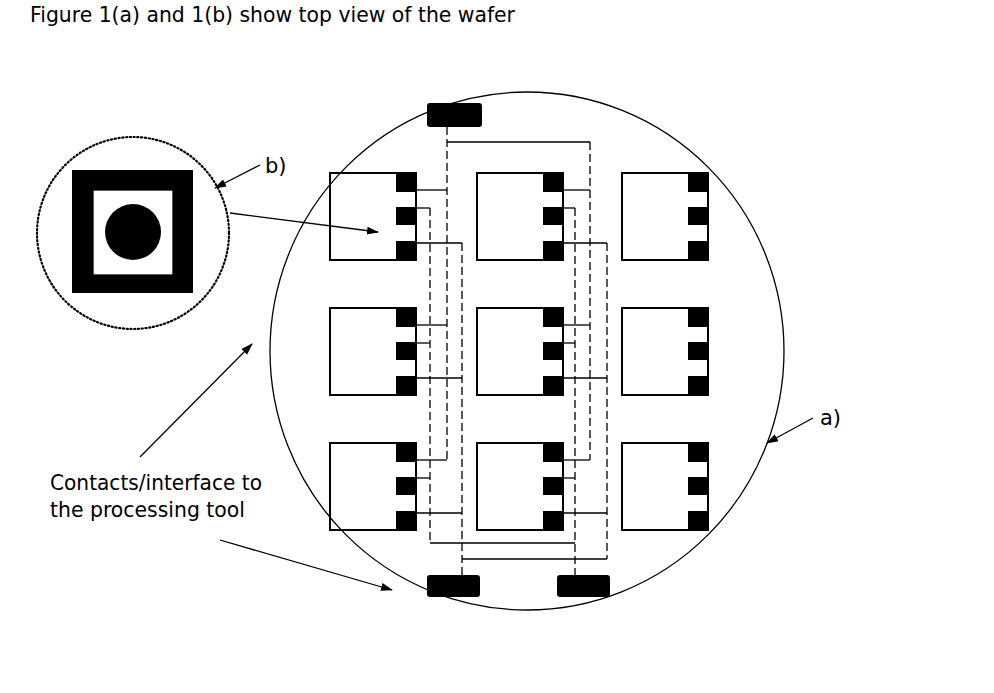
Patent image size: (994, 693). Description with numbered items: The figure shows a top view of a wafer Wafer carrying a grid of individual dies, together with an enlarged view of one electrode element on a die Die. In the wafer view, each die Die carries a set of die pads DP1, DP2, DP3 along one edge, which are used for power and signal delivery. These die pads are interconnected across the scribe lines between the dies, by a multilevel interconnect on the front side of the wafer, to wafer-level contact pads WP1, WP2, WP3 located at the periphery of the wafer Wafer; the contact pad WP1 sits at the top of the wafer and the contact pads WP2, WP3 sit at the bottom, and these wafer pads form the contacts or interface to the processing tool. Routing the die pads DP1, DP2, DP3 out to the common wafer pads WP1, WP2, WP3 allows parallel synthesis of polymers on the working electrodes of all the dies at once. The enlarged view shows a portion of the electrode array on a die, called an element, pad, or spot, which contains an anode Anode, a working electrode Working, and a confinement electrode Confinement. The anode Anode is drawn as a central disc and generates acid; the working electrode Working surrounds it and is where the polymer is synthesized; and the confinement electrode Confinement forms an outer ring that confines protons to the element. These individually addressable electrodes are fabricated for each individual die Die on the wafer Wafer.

In FIG. 1A, the wafer pad WP1 is at (430, 105).
In FIG. 1A, the wafer pad WP2 is at (570, 602).
In FIG. 1A, the wafer pad WP3 is at (465, 602).
In FIG. 1A, the die pad DP1 is at (712, 171).
In FIG. 1A, the die pad DP2 is at (709, 208).
In FIG. 1A, the die pad DP3 is at (709, 238).
In FIG. 1A, the die Die is at (667, 512).
In FIG. 1A, the wafer Wafer is at (357, 152).
In FIG. 1B, the anode Anode is at (123, 258).
In FIG. 1B, the confinement electrode Confinement is at (83, 170).
In FIG. 1B, the working electrode Working is at (100, 253).